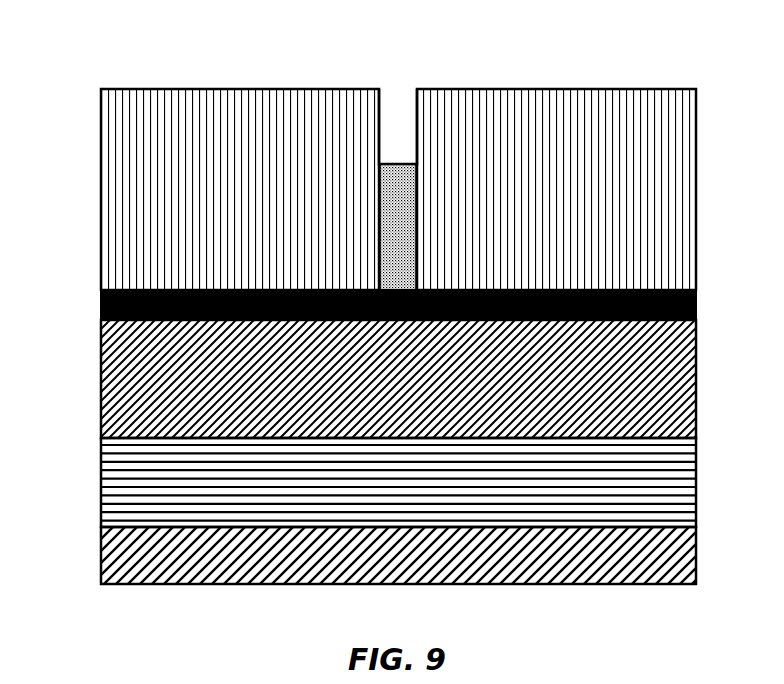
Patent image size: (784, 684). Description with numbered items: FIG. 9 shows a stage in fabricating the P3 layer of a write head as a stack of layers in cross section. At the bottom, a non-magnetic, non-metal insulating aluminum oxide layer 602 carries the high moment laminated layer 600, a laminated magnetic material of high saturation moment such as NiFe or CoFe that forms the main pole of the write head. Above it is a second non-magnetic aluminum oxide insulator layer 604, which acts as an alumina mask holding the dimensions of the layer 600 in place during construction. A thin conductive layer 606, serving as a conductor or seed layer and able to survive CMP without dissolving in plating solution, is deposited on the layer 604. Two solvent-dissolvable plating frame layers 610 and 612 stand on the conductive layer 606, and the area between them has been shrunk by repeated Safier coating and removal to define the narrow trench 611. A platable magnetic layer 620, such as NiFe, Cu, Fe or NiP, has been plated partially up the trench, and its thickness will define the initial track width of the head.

The high moment laminated layer 600 is at (688, 478).
The aluminum layer 602 is at (93, 548).
The aluminum layer 604 is at (93, 369).
The conductive layer 606 is at (688, 300).
The plating frame layer 610 is at (93, 181).
The trench 611 is at (397, 104).
The plating frame layer 612 is at (688, 184).
The magnetic layer 620 is at (398, 227).